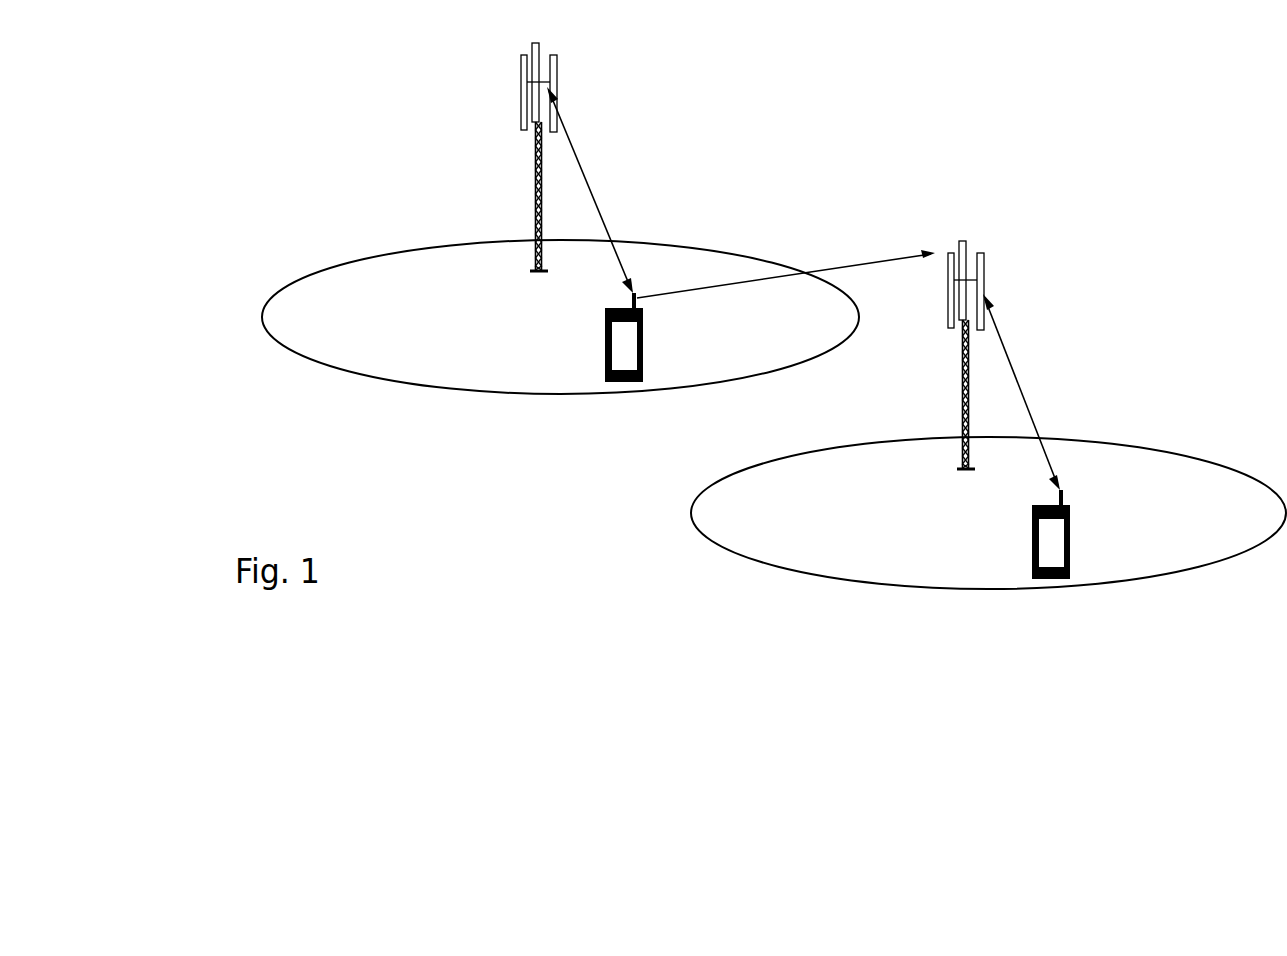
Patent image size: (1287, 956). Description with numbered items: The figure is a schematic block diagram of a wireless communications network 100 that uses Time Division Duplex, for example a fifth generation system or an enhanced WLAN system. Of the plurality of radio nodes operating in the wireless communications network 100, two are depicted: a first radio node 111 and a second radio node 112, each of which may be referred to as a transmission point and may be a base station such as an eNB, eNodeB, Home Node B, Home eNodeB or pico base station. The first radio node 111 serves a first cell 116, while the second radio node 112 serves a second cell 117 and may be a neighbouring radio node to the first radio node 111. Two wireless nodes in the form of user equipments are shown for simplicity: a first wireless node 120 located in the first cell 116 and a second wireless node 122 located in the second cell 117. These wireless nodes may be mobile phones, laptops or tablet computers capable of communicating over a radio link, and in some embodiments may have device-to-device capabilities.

The wireless communications network 100 is at (536, 596).
The first radio node 111 is at (521, 62).
The second radio node 112 is at (963, 353).
The first cell 116 is at (450, 392).
The second cell 117 is at (872, 589).
The first wireless node 120 is at (605, 342).
The second wireless node 122 is at (1033, 540).